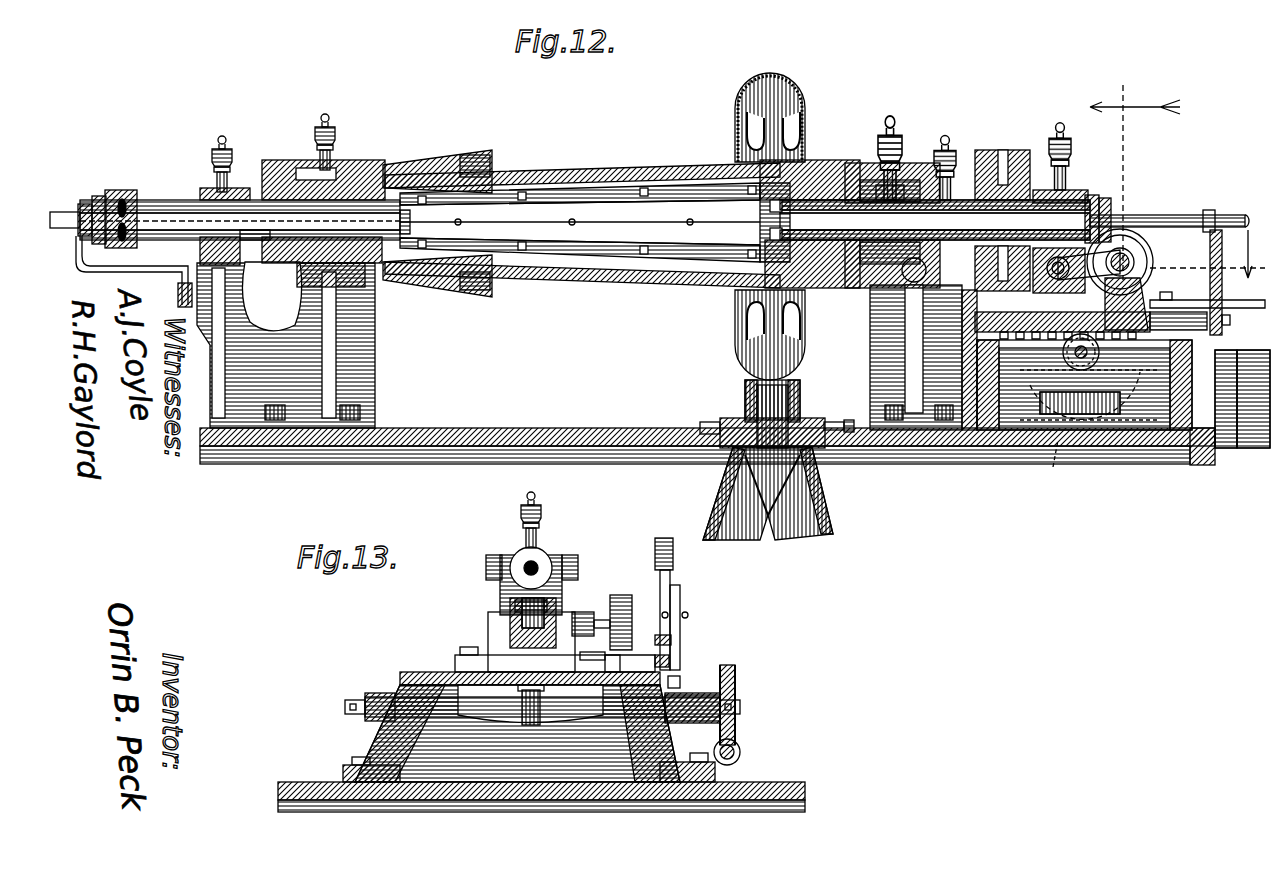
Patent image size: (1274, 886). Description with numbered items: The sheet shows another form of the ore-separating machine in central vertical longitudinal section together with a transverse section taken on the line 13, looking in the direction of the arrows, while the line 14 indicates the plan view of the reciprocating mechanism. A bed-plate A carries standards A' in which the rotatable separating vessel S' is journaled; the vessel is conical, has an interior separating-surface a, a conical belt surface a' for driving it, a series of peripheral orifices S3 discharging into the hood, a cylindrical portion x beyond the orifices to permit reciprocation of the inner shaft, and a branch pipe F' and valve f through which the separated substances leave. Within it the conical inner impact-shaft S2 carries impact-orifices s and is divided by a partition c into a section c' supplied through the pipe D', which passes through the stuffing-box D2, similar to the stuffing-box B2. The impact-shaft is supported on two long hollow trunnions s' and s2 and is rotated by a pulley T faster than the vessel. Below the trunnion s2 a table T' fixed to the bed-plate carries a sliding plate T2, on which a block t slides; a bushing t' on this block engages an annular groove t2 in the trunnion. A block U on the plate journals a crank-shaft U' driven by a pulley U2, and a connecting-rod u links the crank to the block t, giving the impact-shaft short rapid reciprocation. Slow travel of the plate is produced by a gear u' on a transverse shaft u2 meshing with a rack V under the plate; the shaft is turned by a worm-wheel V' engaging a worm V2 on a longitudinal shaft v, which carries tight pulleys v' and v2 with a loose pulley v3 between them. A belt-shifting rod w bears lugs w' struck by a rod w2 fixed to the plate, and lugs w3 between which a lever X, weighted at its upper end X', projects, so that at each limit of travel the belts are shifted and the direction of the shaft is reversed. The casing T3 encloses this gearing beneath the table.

In FIG. 12, the bed-plate A is at (707, 427).
In FIG. 12, the standards A' is at (587, 344).
In FIG. 12, the pipe D' is at (121, 228).
In FIG. 12, the stuffing-box D2 is at (120, 192).
In FIG. 12, the hollow trunnion s' is at (585, 208).
In FIG. 12, the stuffing-box B2 is at (280, 165).
In FIG. 12, the section c' is at (255, 261).
In FIG. 12, the partition c is at (410, 222).
In FIG. 12, the rotatable separating vessel S' is at (581, 219).
In FIG. 12, the inner impact-shaft S2 is at (603, 250).
In FIG. 12, the impact-orifices s is at (580, 226).
In FIG. 12, the separating-surface a is at (717, 247).
In FIG. 12, the branch pipe F' is at (777, 259).
In FIG. 12, the peripheral orifices S3 is at (795, 150).
In FIG. 12, the cylindrical portion x is at (848, 182).
In FIG. 12, the pulley T is at (1002, 202).
In FIG. 12, the hollow trunnion s2 is at (1034, 200).
In FIG. 12, the projecting bushing t' is at (1085, 190).
In FIG. 12, the annular groove t2 is at (1080, 200).
In FIG. 12, the block t is at (1059, 277).
In FIG. 13, the block t is at (516, 553).
In FIG. 12, the pulley U2 is at (1143, 240).
In FIG. 13, the pulley U2 is at (622, 596).
In FIG. 12, the connecting-rod u is at (1100, 229).
In FIG. 13, the connecting-rod u is at (500, 601).
In FIG. 12, the worm-wheel V' is at (1152, 283).
In FIG. 13, the worm-wheel V' is at (747, 705).
In FIG. 12, the rack V is at (1096, 304).
In FIG. 12, the conical belt surface a' is at (1170, 288).
In FIG. 13, the conical belt surface a' is at (553, 548).
In FIG. 12, the sliding plate T2 is at (977, 322).
In FIG. 13, the sliding plate T2 is at (457, 673).
In FIG. 12, the box T3 is at (1033, 332).
In FIG. 12, the table T' is at (1173, 385).
In FIG. 13, the table T' is at (517, 733).
In FIG. 12, the gear u' is at (1085, 376).
In FIG. 13, the gear u' is at (531, 721).
In FIG. 12, the shaft v is at (1191, 431).
In FIG. 13, the shaft v is at (692, 720).
In FIG. 12, the tight pulley v' is at (1216, 426).
In FIG. 12, the loose pulley v3 is at (1247, 452).
In FIG. 12, the tight pulley v2 is at (1265, 452).
In FIG. 12, the worm V2 is at (1060, 467).
In FIG. 13, the worm V2 is at (742, 752).
In FIG. 12, the section line 13 is at (1135, 172).
In FIG. 12, the section line 14 is at (1212, 255).
In FIG. 12, the valve f is at (826, 500).
In FIG. 13, the transverse shaft u2 is at (575, 712).
In FIG. 13, the block U is at (534, 635).
In FIG. 13, the crank-shaft U' is at (592, 602).
In FIG. 13, the weighted upper extremity X' is at (685, 604).
In FIG. 13, the lever X is at (694, 625).
In FIG. 13, the rod w2 is at (640, 640).
In FIG. 13, the lugs w3 is at (662, 657).
In FIG. 13, the belt-shifting rod w is at (659, 657).
In FIG. 13, the lugs w' is at (687, 678).